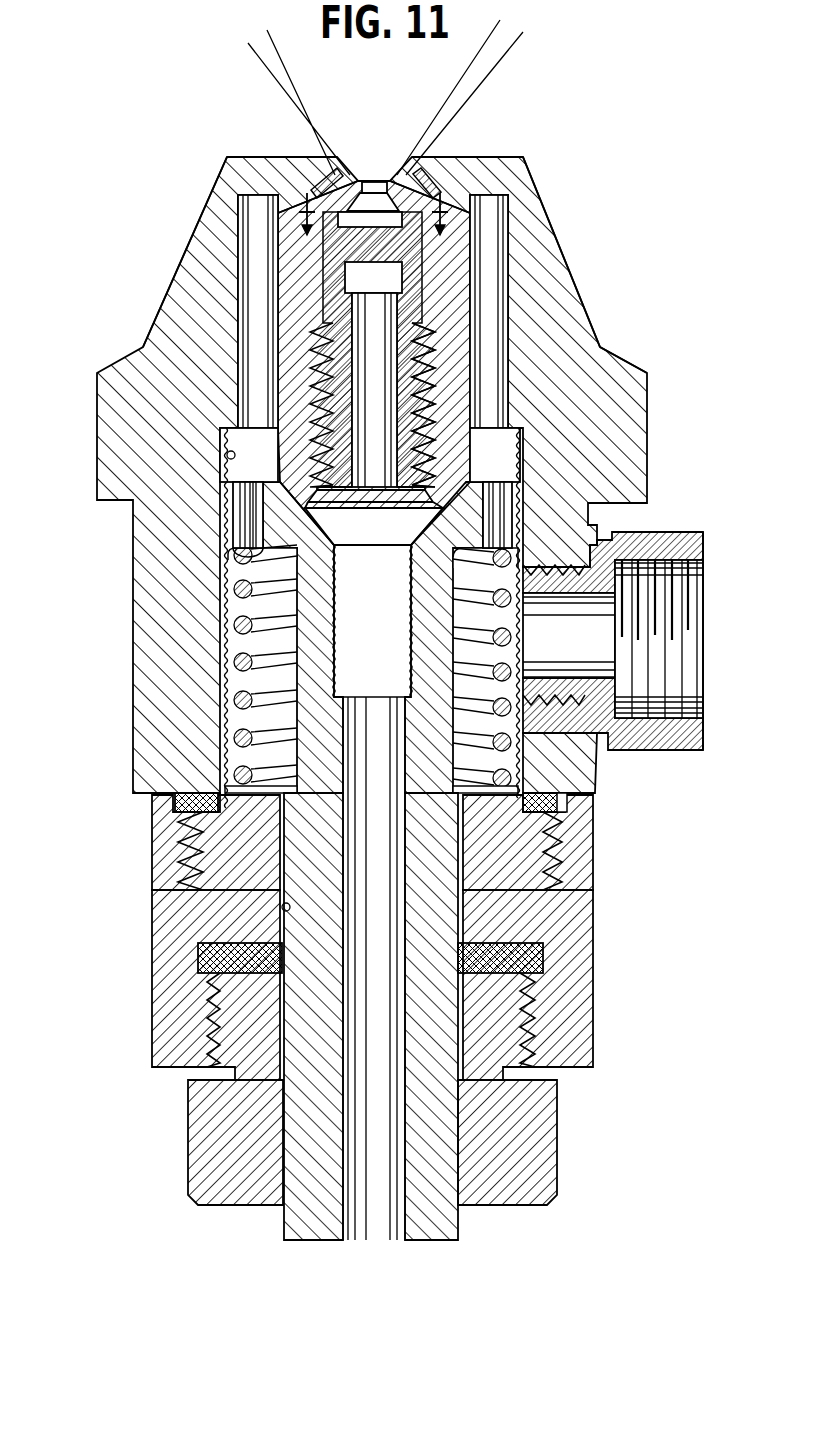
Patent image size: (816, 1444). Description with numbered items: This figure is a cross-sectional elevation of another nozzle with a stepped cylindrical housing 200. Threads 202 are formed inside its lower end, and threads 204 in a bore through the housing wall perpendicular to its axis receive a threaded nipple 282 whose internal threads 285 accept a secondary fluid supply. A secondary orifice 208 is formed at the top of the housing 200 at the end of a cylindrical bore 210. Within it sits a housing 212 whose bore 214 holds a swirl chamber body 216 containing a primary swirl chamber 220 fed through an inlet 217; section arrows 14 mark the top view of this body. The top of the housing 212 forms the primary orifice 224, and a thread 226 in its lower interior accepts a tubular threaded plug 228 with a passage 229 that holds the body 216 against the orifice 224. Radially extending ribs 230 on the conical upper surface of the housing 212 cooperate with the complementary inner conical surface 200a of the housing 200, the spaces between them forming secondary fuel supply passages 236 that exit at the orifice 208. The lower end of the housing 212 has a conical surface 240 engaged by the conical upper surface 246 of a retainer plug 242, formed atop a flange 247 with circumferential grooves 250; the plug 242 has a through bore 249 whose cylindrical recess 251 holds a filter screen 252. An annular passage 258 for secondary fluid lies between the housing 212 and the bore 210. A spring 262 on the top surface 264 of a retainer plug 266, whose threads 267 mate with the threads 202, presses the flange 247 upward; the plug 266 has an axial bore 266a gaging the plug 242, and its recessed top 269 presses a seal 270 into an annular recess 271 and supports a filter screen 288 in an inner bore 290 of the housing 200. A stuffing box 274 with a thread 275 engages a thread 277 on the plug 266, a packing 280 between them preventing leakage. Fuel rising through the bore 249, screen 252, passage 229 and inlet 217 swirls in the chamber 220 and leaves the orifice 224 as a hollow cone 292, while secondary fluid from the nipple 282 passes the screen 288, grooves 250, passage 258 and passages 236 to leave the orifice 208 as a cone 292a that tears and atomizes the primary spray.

The flow direction arrows 14 is at (373, 228).
The housing 200 is at (118, 636).
The inner conical shape surface 200a is at (466, 205).
The threads 202 is at (190, 870).
The second set of threads 204 is at (553, 570).
The secondary orifice 208 is at (345, 175).
The bore 210 is at (503, 245).
The housing 212 is at (460, 287).
The bore 214 is at (417, 313).
The swirl chamber body 216 is at (340, 253).
The inlet 217 is at (393, 290).
The primary swirl chamber 220 is at (342, 230).
The primary orifice 224 is at (373, 180).
The thread 226 is at (427, 400).
The tubular threaded plug 228 is at (320, 360).
The passage 229 is at (357, 475).
The ribs 230 is at (310, 185).
The secondary fuel supply passages 236 is at (287, 195).
The conical surface 240 is at (260, 493).
The retainer plug 242 is at (425, 1232).
The conical upper surface 246 is at (405, 548).
The flange 247 is at (235, 553).
The through bore 249 is at (345, 1242).
The grooves 250 is at (253, 522).
The cylindrical recess 251 is at (408, 602).
The filter screen 252 is at (338, 625).
The annular passage 258 is at (240, 225).
The spring 262 is at (245, 738).
The top surface 264 is at (527, 775).
The retainer plug 266 is at (580, 972).
The axial bore 266a is at (282, 907).
The threads 267 is at (551, 855).
The recessed top 269 is at (567, 803).
The seal 270 is at (177, 803).
The annular recess 271 is at (565, 795).
The stuffing box 274 is at (543, 1143).
The thread 275 is at (530, 1020).
The thread 277 is at (215, 1050).
The packing 280 is at (207, 960).
The threaded nipple 282 is at (680, 532).
The internal threads 285 is at (705, 712).
The filter screen 288 is at (520, 443).
The inner bore 290 is at (227, 455).
The hollow cone 292 is at (278, 74).
The cone 292a is at (470, 66).